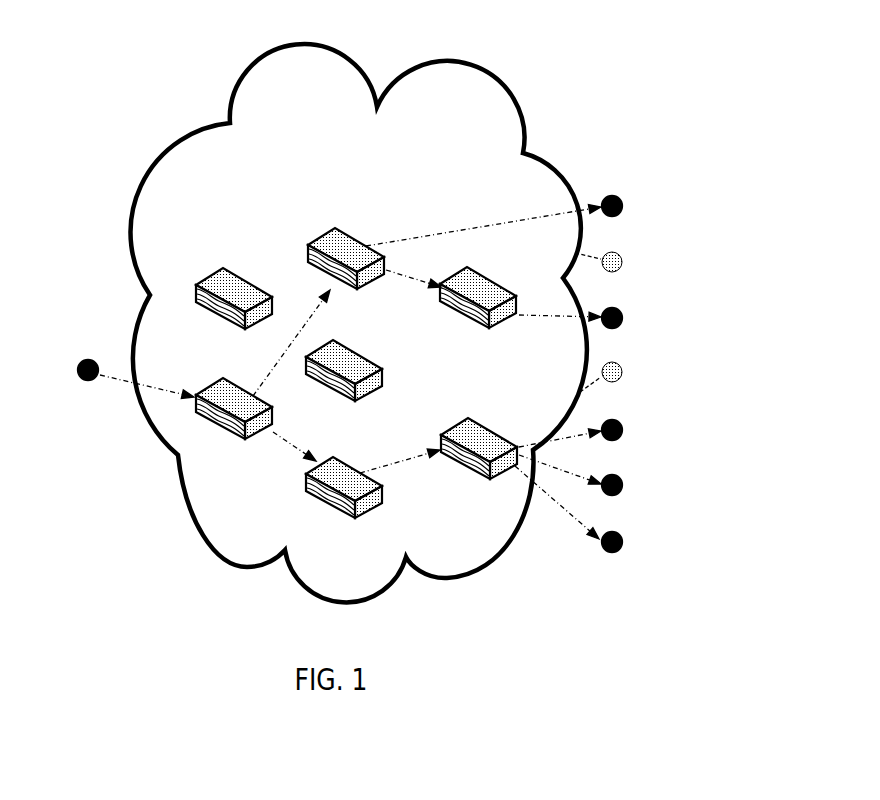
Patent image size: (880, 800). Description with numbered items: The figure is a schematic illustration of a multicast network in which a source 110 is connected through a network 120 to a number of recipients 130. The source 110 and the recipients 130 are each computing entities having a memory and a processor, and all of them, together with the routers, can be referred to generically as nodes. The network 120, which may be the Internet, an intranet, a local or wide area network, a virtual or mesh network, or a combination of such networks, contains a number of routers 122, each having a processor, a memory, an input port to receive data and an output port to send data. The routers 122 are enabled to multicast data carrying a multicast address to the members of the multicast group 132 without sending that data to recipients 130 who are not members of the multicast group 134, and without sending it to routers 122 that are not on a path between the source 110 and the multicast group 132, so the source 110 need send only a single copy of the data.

The source 110 is at (78, 360).
The network 120 is at (487, 78).
The router 122 is at (238, 278).
The recipients 130 is at (614, 600).
The multicast group 132 is at (623, 204).
The multicast group 134 is at (622, 260).